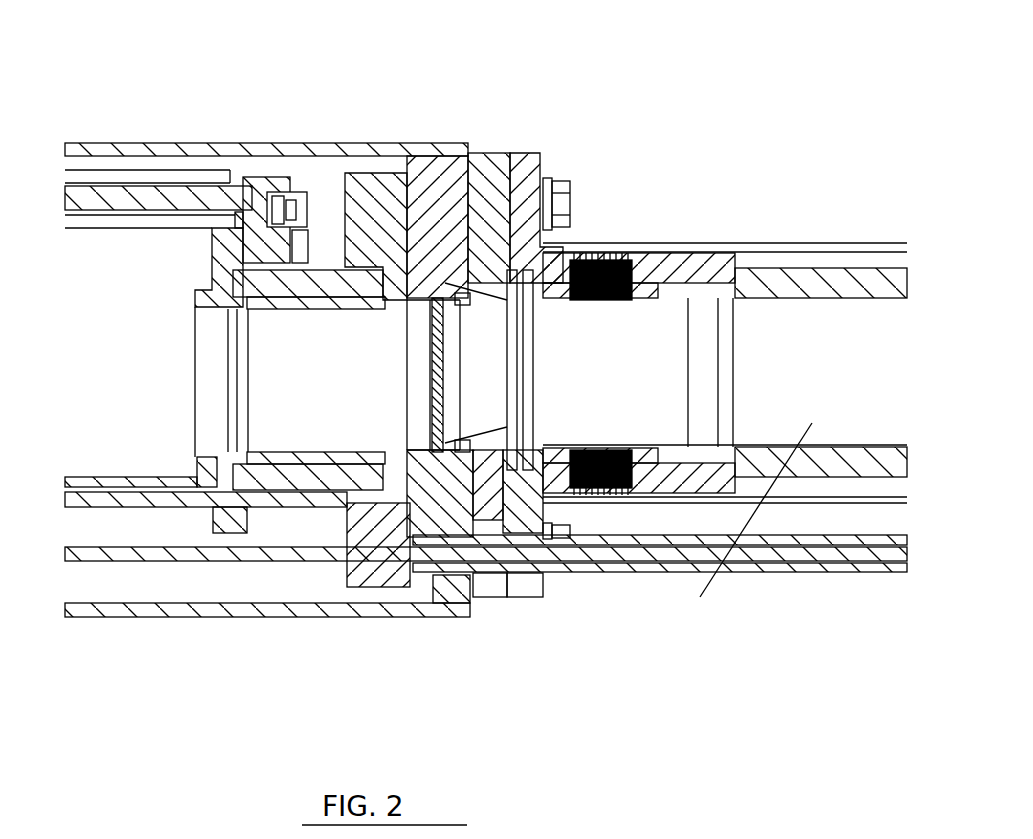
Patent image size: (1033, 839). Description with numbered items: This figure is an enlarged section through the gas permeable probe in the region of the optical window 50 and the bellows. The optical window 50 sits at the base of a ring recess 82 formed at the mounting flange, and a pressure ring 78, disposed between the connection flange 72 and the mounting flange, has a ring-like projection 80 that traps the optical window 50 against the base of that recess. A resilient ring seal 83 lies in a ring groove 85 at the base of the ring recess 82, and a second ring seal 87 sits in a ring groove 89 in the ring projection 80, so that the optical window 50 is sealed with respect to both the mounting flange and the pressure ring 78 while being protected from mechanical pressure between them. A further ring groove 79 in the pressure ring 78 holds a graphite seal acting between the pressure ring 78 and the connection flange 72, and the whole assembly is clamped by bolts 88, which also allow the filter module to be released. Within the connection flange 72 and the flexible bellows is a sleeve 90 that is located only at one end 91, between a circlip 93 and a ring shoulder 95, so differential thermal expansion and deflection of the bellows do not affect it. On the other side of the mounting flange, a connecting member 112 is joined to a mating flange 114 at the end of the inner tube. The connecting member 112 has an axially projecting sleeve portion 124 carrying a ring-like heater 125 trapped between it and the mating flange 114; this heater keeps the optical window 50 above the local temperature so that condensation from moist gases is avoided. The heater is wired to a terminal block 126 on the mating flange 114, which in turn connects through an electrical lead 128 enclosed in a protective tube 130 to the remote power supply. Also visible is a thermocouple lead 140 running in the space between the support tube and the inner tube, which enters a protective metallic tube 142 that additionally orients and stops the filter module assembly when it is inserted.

The optical window 50 is at (640, 335).
The connection flange 72 is at (520, 153).
The pressure ring 78 is at (500, 597).
The ring groove 79 is at (540, 597).
The ring-like projection 80 is at (453, 447).
The ring recess 82 is at (430, 468).
The resilient ring seal 83 is at (437, 298).
The ring groove 85 is at (420, 297).
The second ring seal 87 is at (446, 295).
The bolts 88 is at (562, 182).
The ring groove 89 is at (458, 306).
The sleeve 90 is at (655, 298).
The end 91 is at (540, 337).
The circlip 93 is at (535, 398).
The ring shoulder 95 is at (557, 300).
The connecting member 112 is at (345, 582).
The mating flange 114 is at (210, 525).
The axially projecting sleeve portion 124 is at (267, 440).
The ring-like heater 125 is at (305, 480).
The terminal block 126 is at (270, 178).
The electrical lead 128 is at (117, 200).
The protective tube 130 is at (82, 183).
The thermocouple lead 140 is at (767, 563).
The protective metallic tube 142 is at (878, 567).